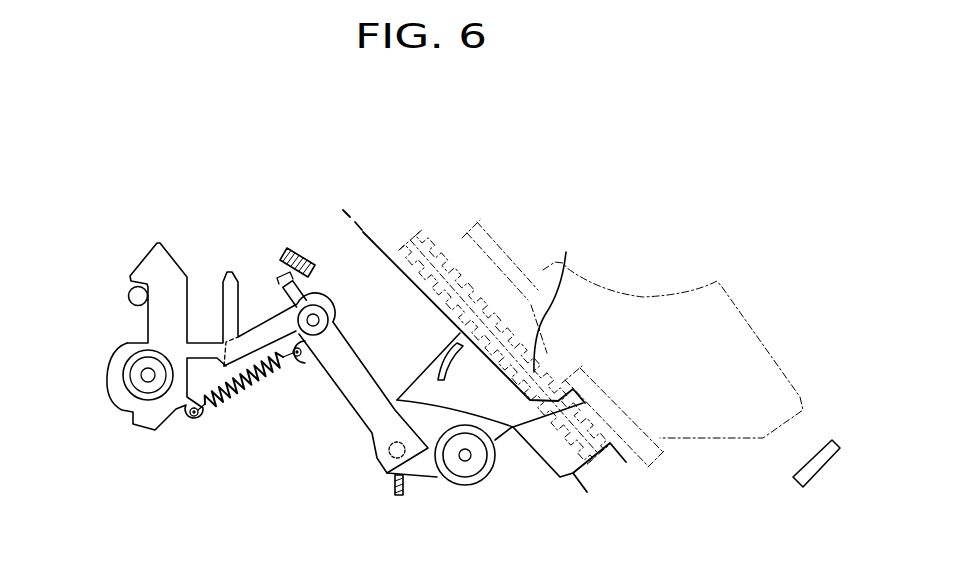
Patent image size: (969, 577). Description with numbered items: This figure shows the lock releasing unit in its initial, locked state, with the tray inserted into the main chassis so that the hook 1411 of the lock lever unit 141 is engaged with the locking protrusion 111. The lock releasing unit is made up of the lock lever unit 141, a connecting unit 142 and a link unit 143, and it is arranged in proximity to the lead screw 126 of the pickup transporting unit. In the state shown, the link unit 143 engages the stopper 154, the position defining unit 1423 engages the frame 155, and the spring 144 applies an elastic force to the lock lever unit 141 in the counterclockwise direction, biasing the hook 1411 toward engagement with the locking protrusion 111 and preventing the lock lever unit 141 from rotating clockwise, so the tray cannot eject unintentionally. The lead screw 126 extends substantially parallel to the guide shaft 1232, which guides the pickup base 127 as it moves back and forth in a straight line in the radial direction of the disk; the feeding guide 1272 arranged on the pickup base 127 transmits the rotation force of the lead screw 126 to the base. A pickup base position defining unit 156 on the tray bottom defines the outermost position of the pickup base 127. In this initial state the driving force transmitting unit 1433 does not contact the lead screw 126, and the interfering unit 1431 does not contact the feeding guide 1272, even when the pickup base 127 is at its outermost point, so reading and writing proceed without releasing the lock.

The locking protrusion 111 is at (130, 295).
The lead screw 126 is at (424, 222).
The pickup base 127 is at (630, 303).
The lock lever unit 141 is at (113, 403).
The connecting unit 142 is at (337, 397).
The link unit 143 is at (483, 493).
The spring 144 is at (250, 398).
The stopper 154 is at (398, 496).
The frame 155 is at (293, 250).
The pickup base position defining unit 156 is at (797, 488).
The guide shaft 1232 is at (493, 247).
The feeding guide 1272 is at (566, 256).
The hook 1411 is at (157, 250).
The position defining unit 1423 is at (279, 270).
The interfering unit 1431 is at (578, 403).
The driving force transmitting unit 1433 is at (430, 367).